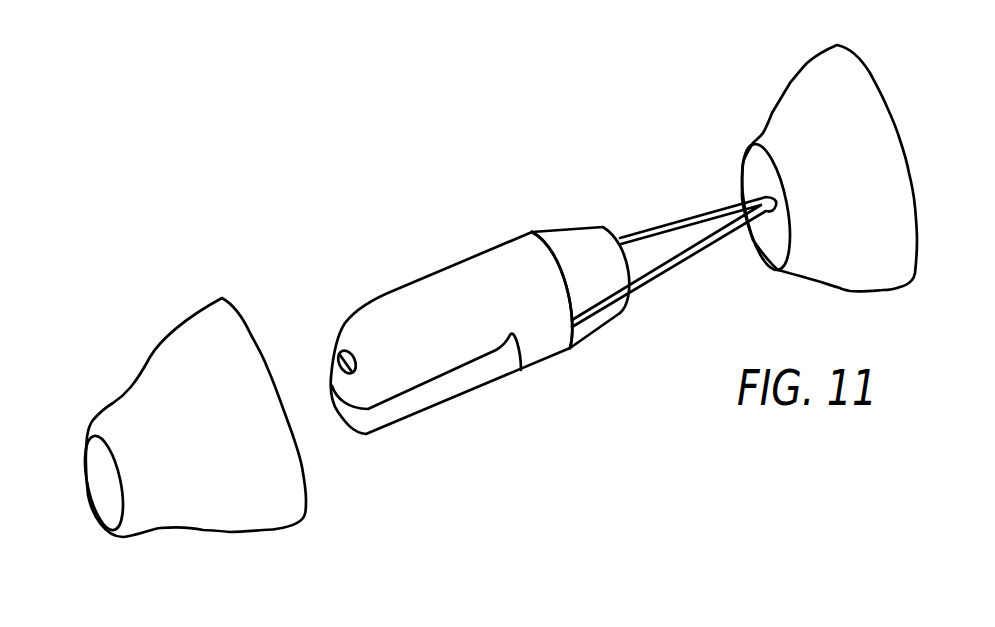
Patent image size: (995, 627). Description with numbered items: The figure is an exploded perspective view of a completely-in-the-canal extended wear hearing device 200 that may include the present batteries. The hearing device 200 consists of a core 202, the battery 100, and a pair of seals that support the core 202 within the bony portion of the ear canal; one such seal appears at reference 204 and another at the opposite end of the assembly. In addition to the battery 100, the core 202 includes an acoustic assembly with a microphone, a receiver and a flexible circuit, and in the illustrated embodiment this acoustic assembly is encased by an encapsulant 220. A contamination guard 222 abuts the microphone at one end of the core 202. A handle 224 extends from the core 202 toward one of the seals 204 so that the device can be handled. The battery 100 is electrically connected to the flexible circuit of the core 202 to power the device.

The battery 100 is at (487, 375).
The hearing device 200 is at (399, 173).
The core 202 is at (443, 324).
The ear tip 204 is at (800, 103).
The encapsulant 220 is at (546, 347).
The contamination guard 222 is at (572, 231).
The handle 224 is at (720, 247).